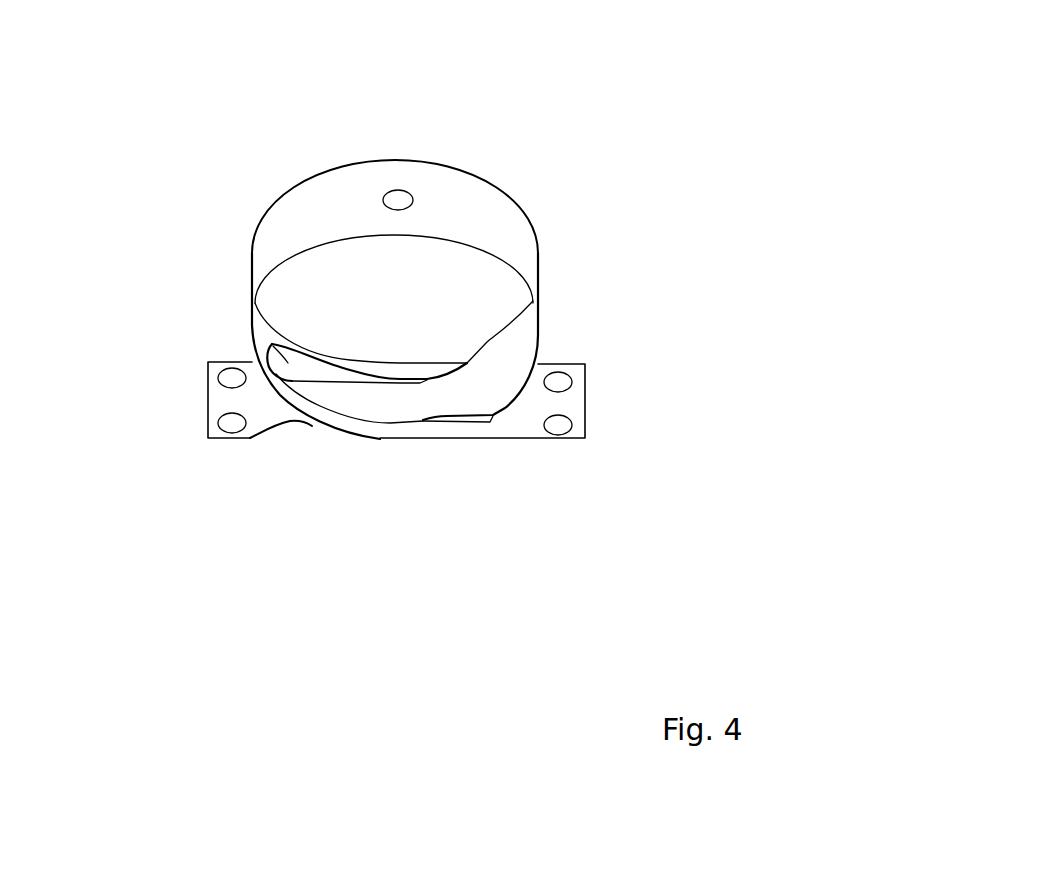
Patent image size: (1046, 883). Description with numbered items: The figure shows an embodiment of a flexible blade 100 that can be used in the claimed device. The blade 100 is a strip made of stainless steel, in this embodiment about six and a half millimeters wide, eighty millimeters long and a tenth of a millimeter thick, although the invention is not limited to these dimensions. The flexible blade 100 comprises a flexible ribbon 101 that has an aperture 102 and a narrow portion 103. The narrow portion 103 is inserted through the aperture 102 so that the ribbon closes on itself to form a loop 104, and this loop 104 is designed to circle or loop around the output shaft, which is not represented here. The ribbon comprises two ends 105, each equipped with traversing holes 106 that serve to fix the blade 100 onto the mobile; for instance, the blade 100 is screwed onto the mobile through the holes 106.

The flexible blade 100 is at (413, 284).
The flexible ribbon 101 is at (414, 347).
The aperture 102 is at (272, 345).
The narrow portion 103 is at (443, 405).
The loop 104 is at (397, 405).
The ends 105 is at (250, 438).
The traversing holes 106 is at (232, 423).